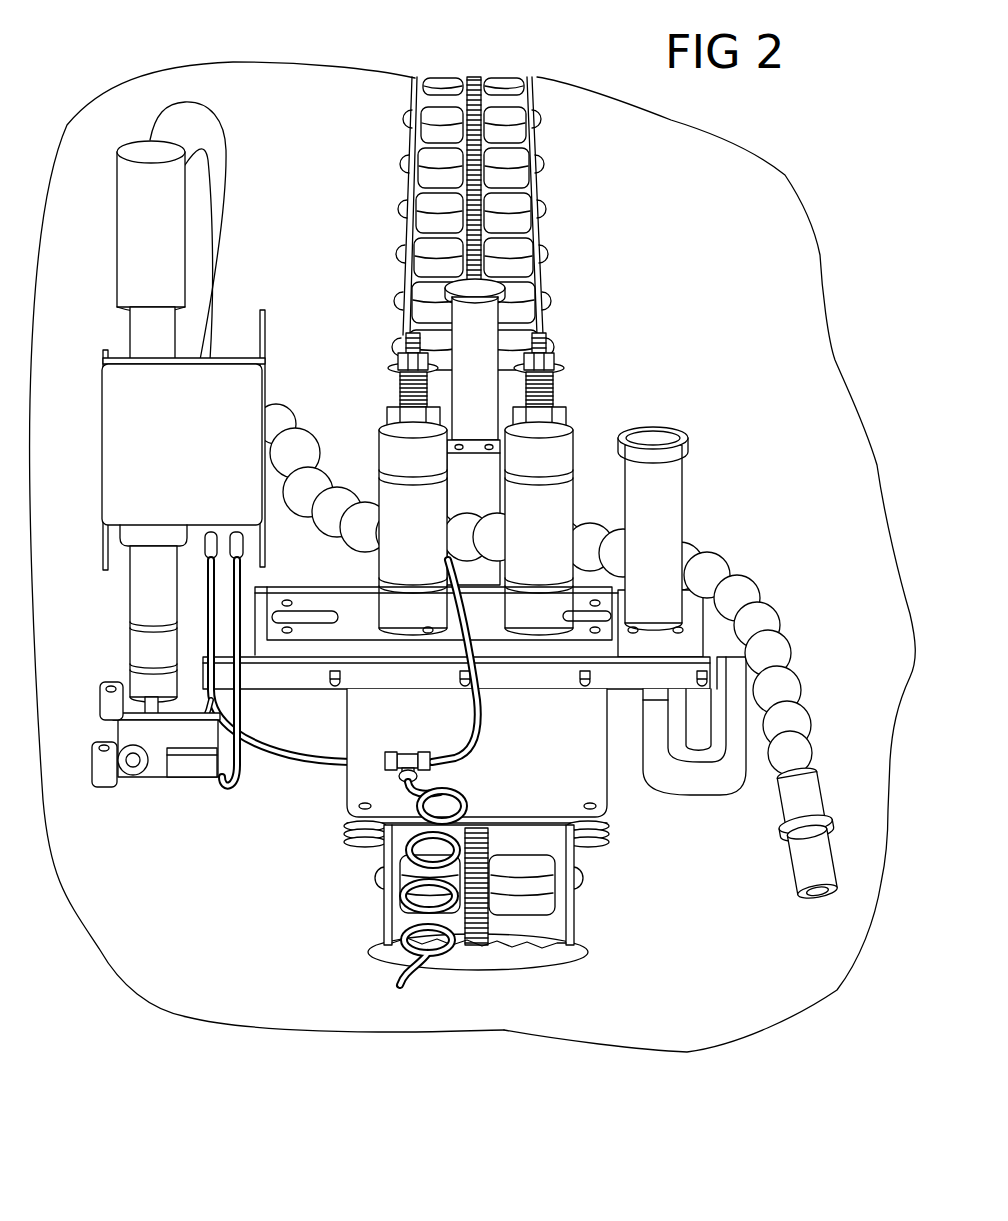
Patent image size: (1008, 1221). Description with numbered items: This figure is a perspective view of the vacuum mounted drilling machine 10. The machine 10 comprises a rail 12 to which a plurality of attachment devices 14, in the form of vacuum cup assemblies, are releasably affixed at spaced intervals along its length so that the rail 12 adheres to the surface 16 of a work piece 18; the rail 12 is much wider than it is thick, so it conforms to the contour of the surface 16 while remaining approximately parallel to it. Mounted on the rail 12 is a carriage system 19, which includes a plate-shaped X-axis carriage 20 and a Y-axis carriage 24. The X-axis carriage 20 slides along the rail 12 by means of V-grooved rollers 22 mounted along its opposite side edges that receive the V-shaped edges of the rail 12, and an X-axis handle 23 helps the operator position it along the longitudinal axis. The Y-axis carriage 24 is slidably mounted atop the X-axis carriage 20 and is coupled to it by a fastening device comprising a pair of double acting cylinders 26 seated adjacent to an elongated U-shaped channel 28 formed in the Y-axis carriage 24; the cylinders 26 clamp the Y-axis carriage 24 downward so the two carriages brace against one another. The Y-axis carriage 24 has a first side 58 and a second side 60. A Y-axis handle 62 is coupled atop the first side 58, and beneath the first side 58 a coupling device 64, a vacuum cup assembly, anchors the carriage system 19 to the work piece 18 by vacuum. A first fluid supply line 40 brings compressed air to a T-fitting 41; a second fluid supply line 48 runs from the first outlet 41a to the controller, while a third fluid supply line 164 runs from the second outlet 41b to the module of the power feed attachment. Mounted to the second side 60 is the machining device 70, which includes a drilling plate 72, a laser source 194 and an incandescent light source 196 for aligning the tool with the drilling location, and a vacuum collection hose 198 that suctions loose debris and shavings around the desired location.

The vacuum mounted drilling machine 10 is at (473, 550).
The rail 12 is at (560, 920).
The attachment devices 14 is at (382, 947).
The surface 16 is at (248, 1005).
The work piece 18 is at (686, 1053).
The carriage system 19 is at (662, 387).
The X-axis carriage 20 is at (598, 790).
The rollers 22 is at (360, 838).
The X-axis handle 23 is at (497, 288).
The Y-axis carriage 24 is at (290, 682).
The double acting cylinders 26 is at (373, 425).
The U-shaped channel 28 is at (335, 617).
The first fluid supply line 40 is at (418, 780).
The T-fitting 41 is at (370, 749).
The first outlet 41a is at (427, 752).
The second outlet 41b is at (392, 770).
The second fluid supply line 48 is at (479, 716).
The first side 58 is at (700, 628).
The second side 60 is at (207, 640).
The Y-axis handle 62 is at (668, 442).
The coupling device 64 is at (705, 780).
The machining device 70 is at (80, 236).
The drilling plate 72 is at (120, 688).
The third fluid supply line 164 is at (282, 727).
The laser source 194 is at (133, 778).
The incandescent light source 196 is at (190, 778).
The vacuum collection hose 198 is at (722, 572).